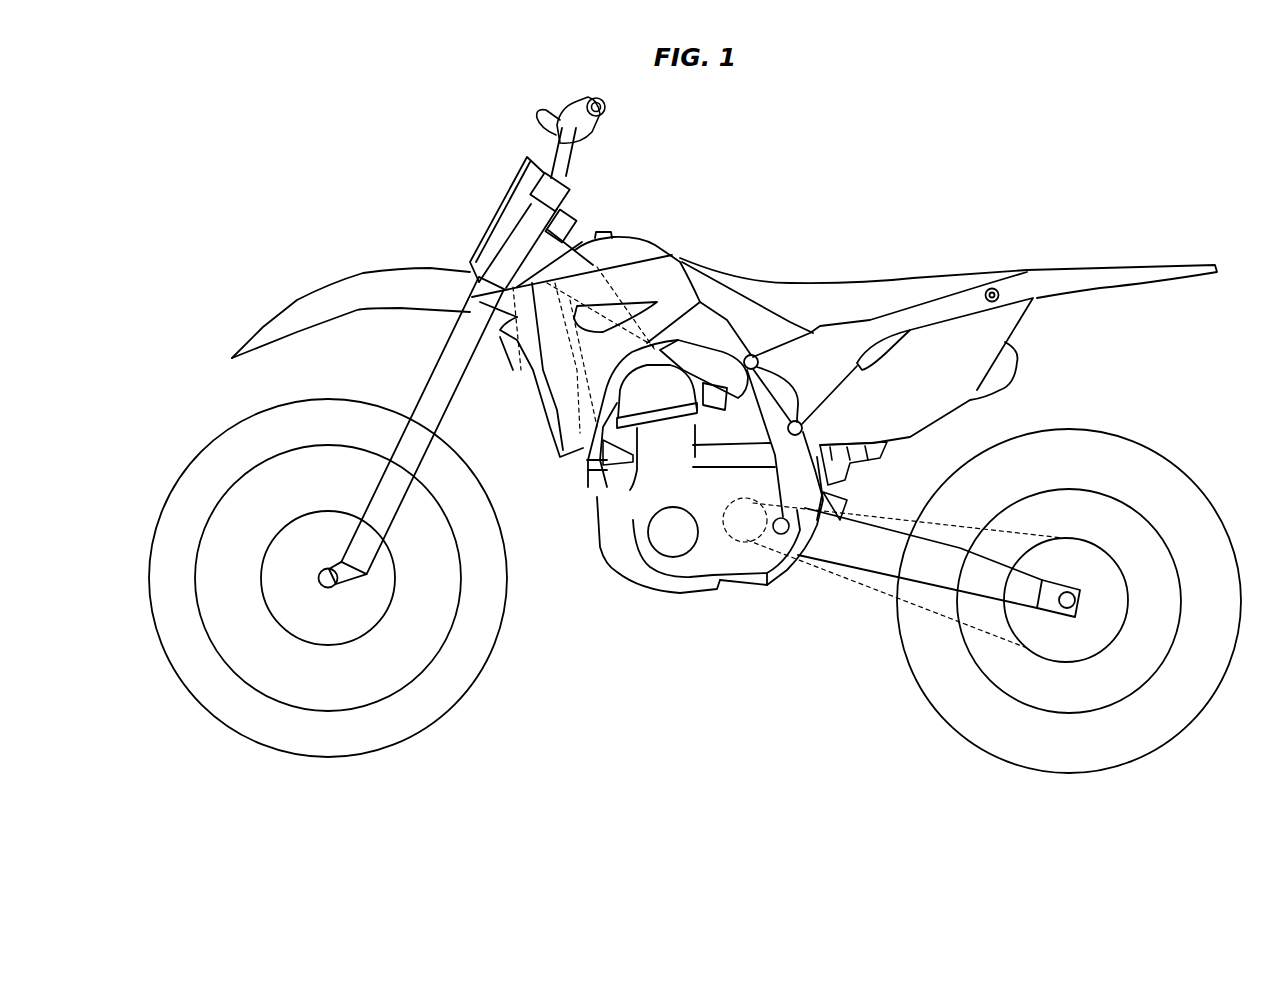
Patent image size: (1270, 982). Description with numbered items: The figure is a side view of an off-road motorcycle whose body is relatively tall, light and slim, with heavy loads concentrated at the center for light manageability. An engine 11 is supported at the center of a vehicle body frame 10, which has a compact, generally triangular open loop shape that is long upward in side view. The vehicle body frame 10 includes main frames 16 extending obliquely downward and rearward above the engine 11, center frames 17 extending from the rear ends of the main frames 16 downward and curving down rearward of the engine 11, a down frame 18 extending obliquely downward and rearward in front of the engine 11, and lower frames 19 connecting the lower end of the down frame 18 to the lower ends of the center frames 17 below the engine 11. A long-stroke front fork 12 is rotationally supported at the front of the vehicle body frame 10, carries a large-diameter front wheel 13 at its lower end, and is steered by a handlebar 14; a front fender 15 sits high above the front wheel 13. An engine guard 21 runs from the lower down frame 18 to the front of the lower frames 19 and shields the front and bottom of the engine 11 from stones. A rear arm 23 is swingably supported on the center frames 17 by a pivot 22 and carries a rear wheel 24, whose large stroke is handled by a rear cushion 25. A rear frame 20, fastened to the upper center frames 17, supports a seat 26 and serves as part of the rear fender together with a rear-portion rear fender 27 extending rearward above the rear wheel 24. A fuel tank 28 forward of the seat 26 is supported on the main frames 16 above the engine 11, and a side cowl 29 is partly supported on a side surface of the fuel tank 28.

The vehicle body frame 10 is at (683, 328).
The engine 11 is at (640, 505).
The front fork 12 is at (436, 372).
The front wheel 13 is at (300, 398).
The handlebar 14 is at (604, 120).
The front fender 15 is at (345, 278).
The main frames 16 is at (712, 362).
The center frames 17 is at (850, 462).
The down frame 18 is at (580, 447).
The lower frames 19 is at (753, 578).
The rear frame 20 is at (866, 322).
The engine guard 21 is at (627, 568).
The pivot 22 is at (781, 537).
The rear arm 23 is at (870, 564).
The rear wheel 24 is at (1085, 426).
The rear cushion 25 is at (846, 491).
The seat 26 is at (855, 286).
The rear-portion rear fender 27 is at (1058, 281).
The fuel tank 28 is at (632, 238).
The side cowl 29 is at (540, 375).